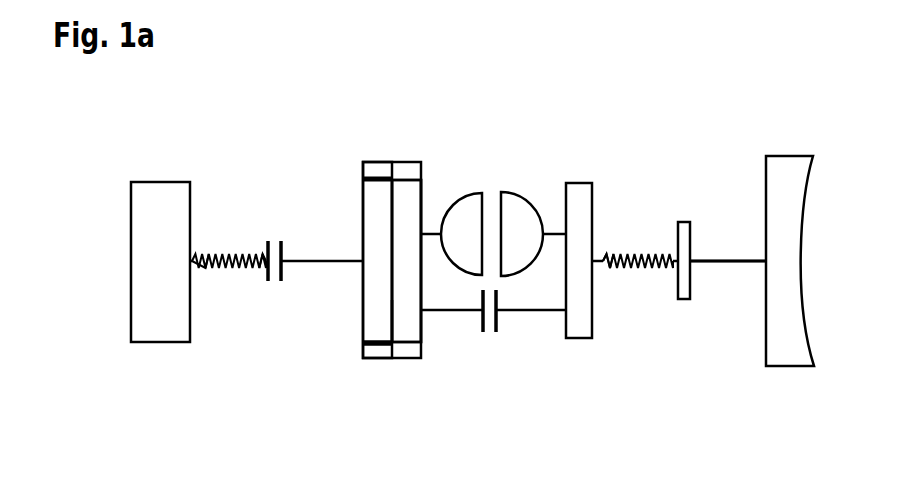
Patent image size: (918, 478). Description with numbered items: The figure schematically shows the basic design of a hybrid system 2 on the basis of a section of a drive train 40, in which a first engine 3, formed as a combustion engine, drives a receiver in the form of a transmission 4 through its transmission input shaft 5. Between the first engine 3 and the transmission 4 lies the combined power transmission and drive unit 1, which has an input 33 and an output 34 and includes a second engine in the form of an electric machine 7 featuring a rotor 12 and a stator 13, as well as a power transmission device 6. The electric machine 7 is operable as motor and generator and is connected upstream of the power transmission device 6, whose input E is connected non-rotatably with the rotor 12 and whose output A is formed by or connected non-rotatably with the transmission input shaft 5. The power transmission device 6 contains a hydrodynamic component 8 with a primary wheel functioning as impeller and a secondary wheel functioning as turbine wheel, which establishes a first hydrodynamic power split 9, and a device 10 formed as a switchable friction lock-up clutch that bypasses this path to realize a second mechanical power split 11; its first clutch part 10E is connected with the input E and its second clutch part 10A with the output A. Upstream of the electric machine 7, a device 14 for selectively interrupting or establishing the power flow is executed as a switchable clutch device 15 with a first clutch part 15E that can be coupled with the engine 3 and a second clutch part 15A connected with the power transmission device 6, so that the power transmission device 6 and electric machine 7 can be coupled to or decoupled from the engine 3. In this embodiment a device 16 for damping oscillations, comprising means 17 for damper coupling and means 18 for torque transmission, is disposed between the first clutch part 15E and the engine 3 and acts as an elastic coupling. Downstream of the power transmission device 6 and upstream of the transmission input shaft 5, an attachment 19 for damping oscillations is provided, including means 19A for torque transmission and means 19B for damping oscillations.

The combined power transmission and drive unit 1 is at (522, 114).
The hybrid system 2 is at (337, 76).
The first engine 3 is at (165, 203).
The transmission 4 is at (785, 172).
The transmission input shaft 5 is at (747, 258).
The power transmission device 6 is at (548, 158).
The electric machine 7 is at (384, 116).
The hydrodynamic component 8 is at (481, 188).
The first hydrodynamic power split 9 is at (516, 186).
The device for bypassing power transmission 10 is at (462, 324).
The second mechanical power split 11 is at (472, 359).
The first clutch part 10E is at (485, 332).
The second clutch part 10A is at (500, 327).
The rotor 12 is at (365, 174).
The stator 13 is at (366, 350).
The device for selectively interrupting/establishing the power flow 14 is at (278, 282).
The switchable clutch device 15 is at (310, 334).
The first clutch part 15E is at (268, 243).
The second clutch part 15A is at (281, 242).
The device for damping oscillations 16 is at (207, 268).
The means for damper coupling 17 is at (253, 268).
The means for torque transmission 18 is at (258, 341).
The attachment for damping oscillations 19 is at (639, 255).
The means for torque transmission 19A is at (621, 268).
The means for damping oscillations 19B is at (667, 268).
The input 33 is at (407, 320).
The output 34 is at (718, 265).
The drive train 40 is at (456, 76).
The input E is at (407, 203).
The output A is at (704, 258).